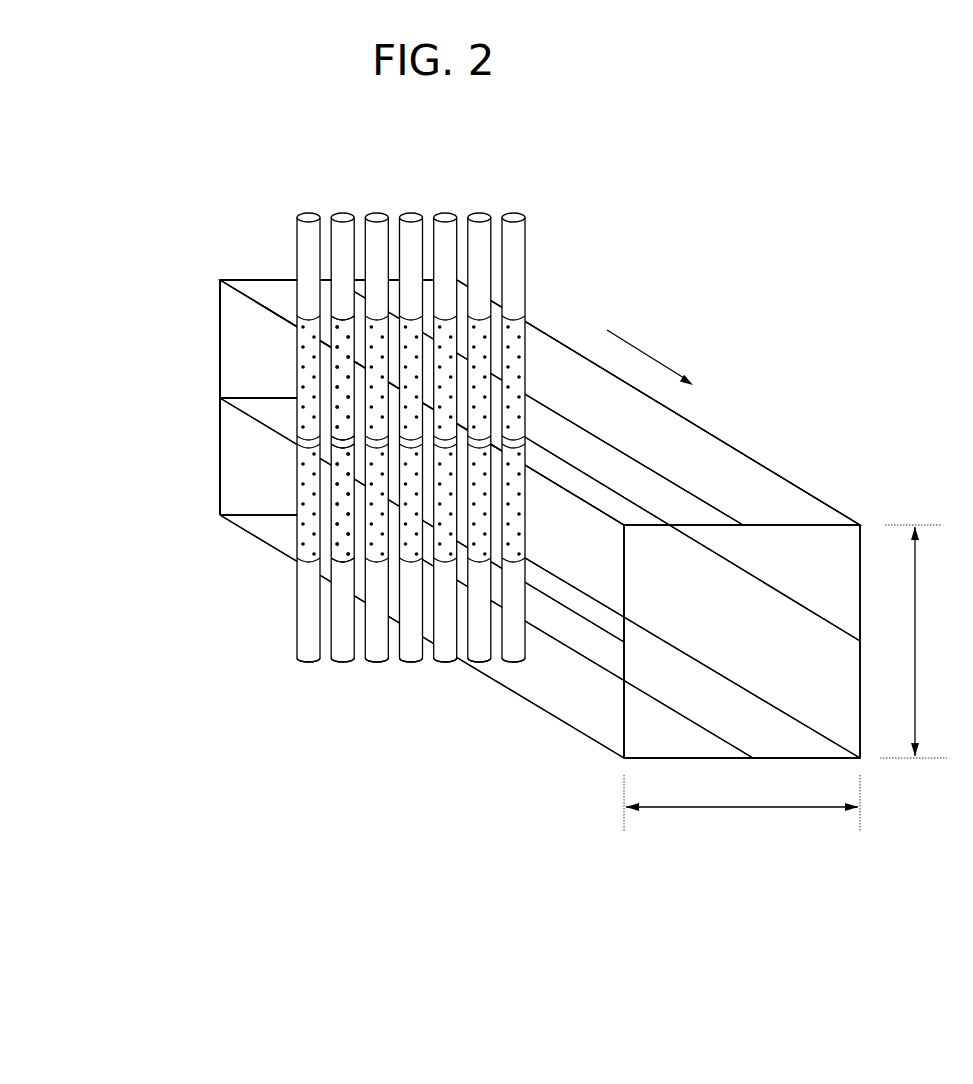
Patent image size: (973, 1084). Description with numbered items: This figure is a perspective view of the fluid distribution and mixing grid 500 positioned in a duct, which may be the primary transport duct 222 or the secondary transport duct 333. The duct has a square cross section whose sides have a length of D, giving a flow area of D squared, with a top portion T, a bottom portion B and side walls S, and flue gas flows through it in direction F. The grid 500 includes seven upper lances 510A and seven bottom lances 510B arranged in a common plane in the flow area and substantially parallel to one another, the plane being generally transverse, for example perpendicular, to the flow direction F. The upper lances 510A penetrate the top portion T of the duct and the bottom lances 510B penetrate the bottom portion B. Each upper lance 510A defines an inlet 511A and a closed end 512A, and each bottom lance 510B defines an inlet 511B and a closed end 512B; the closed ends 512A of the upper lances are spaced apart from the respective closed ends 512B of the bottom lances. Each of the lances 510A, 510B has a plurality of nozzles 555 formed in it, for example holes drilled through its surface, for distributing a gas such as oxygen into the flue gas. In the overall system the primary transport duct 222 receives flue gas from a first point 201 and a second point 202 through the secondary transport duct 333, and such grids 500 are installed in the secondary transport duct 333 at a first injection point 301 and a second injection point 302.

The fluid distribution and mixing grid 500 is at (520, 183).
The upper lances 510A is at (307, 250).
The bottom lances 510B is at (480, 565).
The inlet of upper lance 511A is at (311, 218).
The inlet of bottom lance 511B is at (310, 664).
The closed end of upper lance 512A is at (310, 437).
The closed end of bottom lance 512B is at (310, 450).
The nozzles 555 is at (325, 386).
The primary transport duct 222 is at (760, 461).
The secondary transport duct 333 is at (540, 519).
The first point 201 is at (282, 465).
The second point 202 is at (258, 397).
The first injection point 301 is at (258, 397).
The second injection point 302 is at (258, 397).
The top portion T is at (800, 524).
The sides S is at (860, 597).
The bottom portion B is at (797, 760).
The side length D is at (918, 642).
The direction of flow F is at (653, 348).